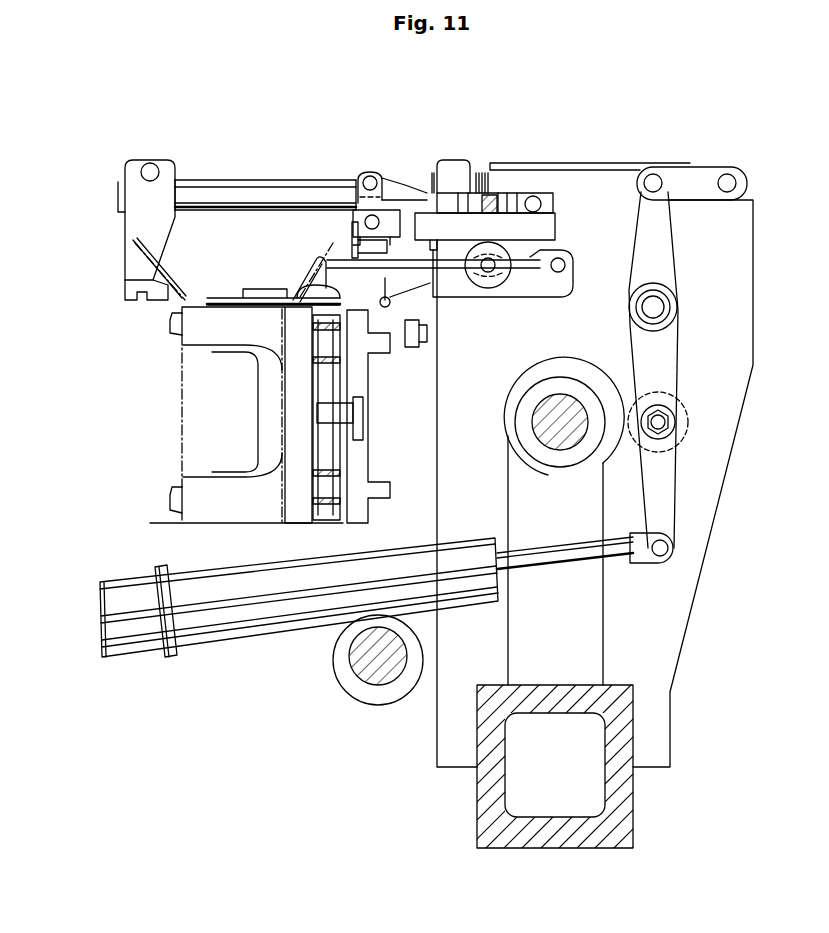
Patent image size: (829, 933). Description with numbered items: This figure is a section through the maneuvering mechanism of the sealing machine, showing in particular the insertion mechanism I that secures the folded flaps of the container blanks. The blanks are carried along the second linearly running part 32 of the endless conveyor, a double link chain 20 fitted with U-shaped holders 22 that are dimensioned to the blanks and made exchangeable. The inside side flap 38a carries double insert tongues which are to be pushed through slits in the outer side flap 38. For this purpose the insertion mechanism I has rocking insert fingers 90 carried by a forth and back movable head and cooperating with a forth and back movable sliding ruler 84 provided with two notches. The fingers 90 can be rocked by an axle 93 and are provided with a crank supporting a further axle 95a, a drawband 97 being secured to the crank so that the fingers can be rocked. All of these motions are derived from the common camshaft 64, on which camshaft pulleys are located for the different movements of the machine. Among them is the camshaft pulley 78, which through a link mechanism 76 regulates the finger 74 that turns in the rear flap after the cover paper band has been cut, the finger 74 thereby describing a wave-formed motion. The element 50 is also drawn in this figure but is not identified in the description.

The insertion mechanism I is at (363, 172).
The double link chain 20 is at (345, 475).
The holders 22 is at (205, 488).
The linearly running part 32 is at (345, 360).
The outer side flap 38 is at (158, 268).
The inside side flap 38a is at (333, 245).
The tab 50 is at (170, 330).
The common camshaft 64 is at (540, 428).
The finger 74 is at (218, 298).
The link mechanism 76 is at (456, 162).
The camshaft pulley 78 is at (568, 362).
The sliding ruler 84 is at (150, 300).
The insert fingers 90 is at (352, 242).
The axle 93 is at (357, 200).
The axle 95a is at (392, 328).
The drawband 97 is at (418, 297).